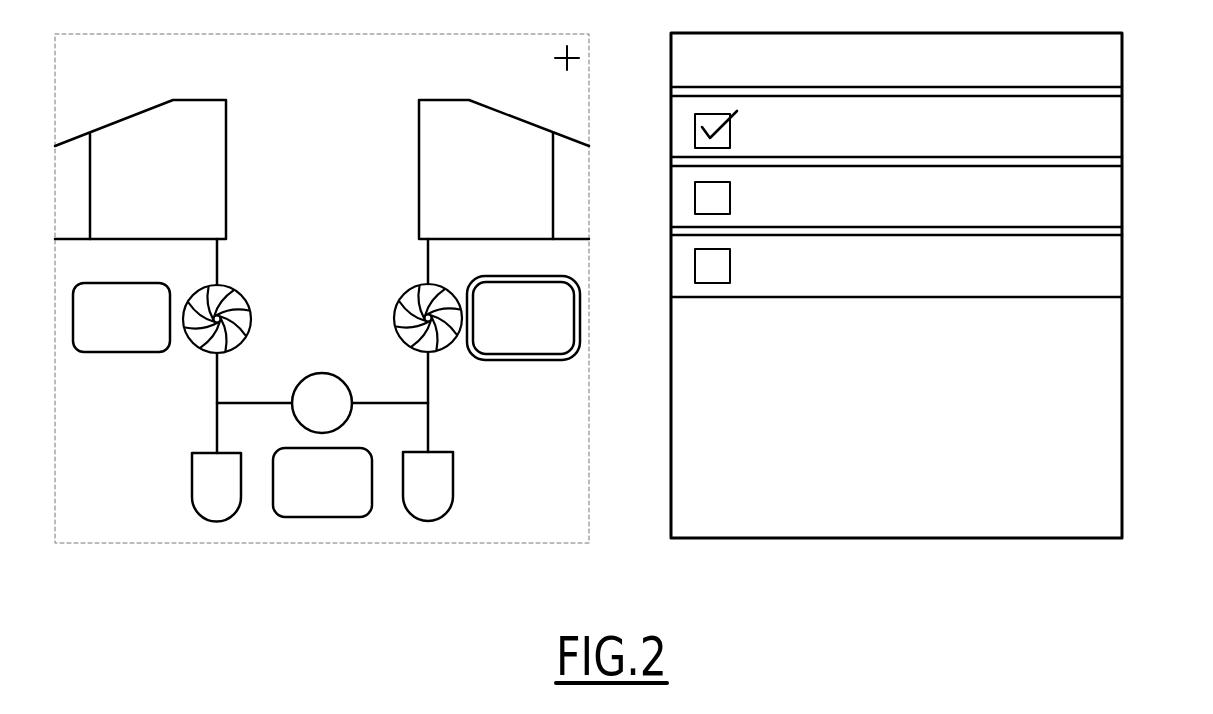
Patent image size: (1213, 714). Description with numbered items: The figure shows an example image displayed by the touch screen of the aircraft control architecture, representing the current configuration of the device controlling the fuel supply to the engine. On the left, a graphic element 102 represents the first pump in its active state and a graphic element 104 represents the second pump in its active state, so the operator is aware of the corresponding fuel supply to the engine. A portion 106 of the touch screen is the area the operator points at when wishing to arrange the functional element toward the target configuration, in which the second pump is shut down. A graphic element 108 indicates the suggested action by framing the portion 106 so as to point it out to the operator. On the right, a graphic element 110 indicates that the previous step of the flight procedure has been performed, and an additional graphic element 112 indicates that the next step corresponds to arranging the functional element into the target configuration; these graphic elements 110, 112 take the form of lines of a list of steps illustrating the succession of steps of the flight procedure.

The graphic element 102 is at (203, 353).
The graphic element 104 is at (442, 357).
The portion of the touch screen 106 is at (524, 327).
The graphic element 108 is at (580, 317).
The graphic element 110 is at (1099, 126).
The additional graphic element 112 is at (1101, 202).